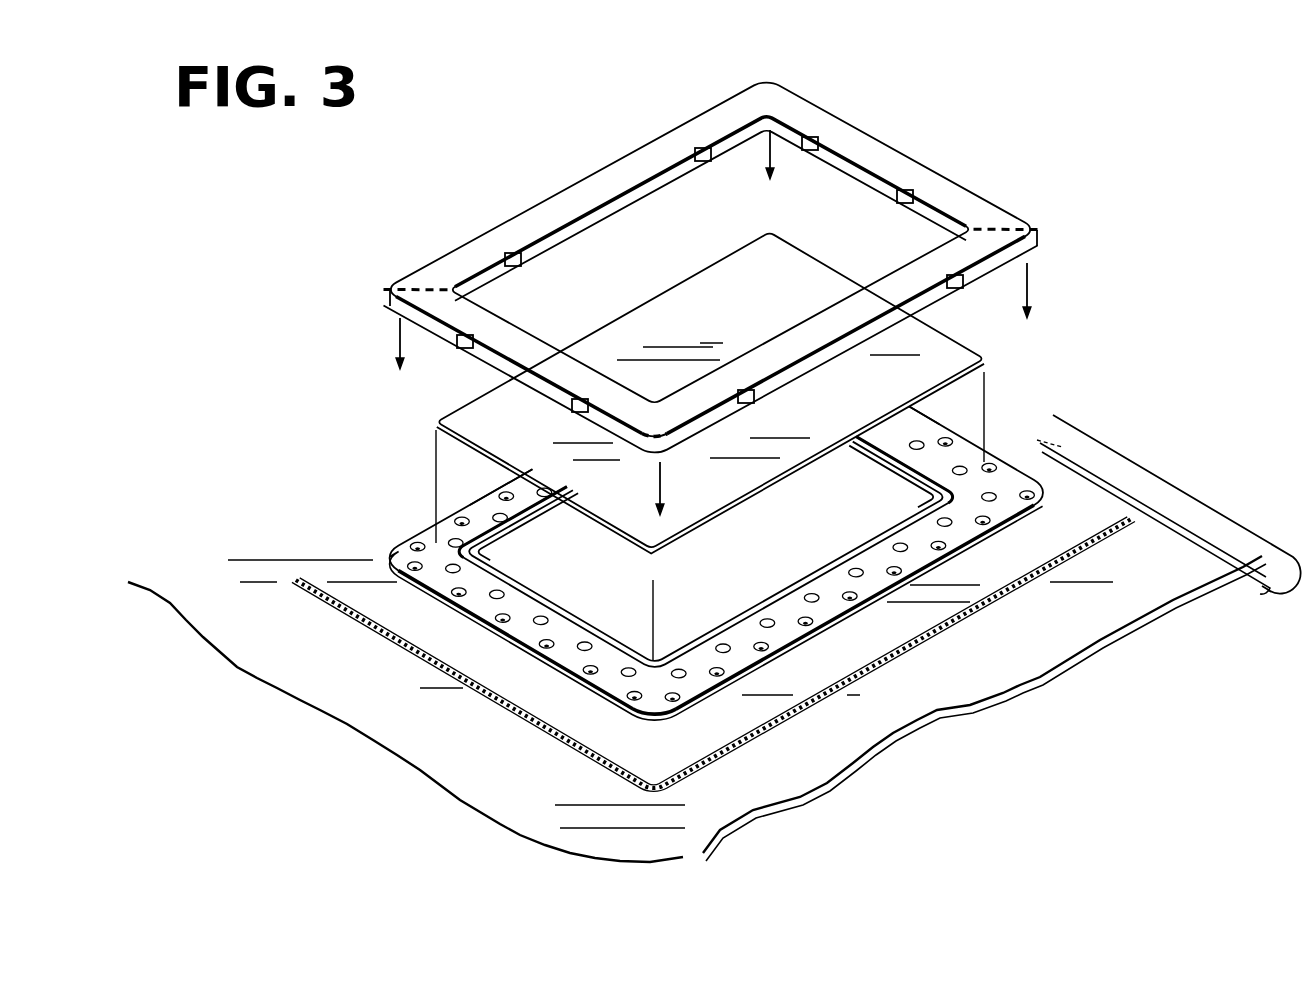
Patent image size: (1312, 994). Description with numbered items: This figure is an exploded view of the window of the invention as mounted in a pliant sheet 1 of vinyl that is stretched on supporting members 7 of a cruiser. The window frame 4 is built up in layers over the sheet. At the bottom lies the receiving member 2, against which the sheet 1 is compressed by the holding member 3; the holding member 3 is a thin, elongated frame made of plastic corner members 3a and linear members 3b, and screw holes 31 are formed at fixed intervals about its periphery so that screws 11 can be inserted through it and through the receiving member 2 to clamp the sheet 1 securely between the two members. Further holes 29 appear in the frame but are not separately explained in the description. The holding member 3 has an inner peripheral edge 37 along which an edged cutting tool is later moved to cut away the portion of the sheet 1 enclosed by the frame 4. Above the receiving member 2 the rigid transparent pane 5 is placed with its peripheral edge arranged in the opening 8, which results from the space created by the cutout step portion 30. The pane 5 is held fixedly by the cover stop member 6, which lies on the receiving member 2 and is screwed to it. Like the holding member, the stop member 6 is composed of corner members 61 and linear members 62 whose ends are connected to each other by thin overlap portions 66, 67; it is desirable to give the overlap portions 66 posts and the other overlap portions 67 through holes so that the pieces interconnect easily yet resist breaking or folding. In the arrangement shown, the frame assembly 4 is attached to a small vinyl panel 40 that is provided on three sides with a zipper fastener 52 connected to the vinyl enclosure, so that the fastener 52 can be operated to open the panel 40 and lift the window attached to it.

The pliant sheet 1 is at (1000, 700).
The receiving member 2 is at (850, 555).
The holding member 3 is at (985, 562).
The corner members 3a is at (1033, 505).
The linear members 3b is at (952, 556).
The window frame 4 is at (815, 573).
The transparent pane 5 is at (712, 512).
The cover stop member 6 is at (912, 250).
The supporting members 7 is at (1132, 478).
The opening 8 is at (628, 611).
The screws 11 is at (882, 602).
The inner holes 29 is at (720, 625).
The cutout step portion 30 is at (900, 530).
The screw holes 31 is at (852, 616).
The inner peripheral edge 37 is at (527, 533).
The vinyl panel 40 is at (1063, 490).
The zipper fastener 52 is at (800, 722).
The corner members 61 is at (822, 116).
The linear members 62 is at (900, 162).
The overlap portion 66 is at (960, 292).
The overlap portion 67 is at (957, 289).